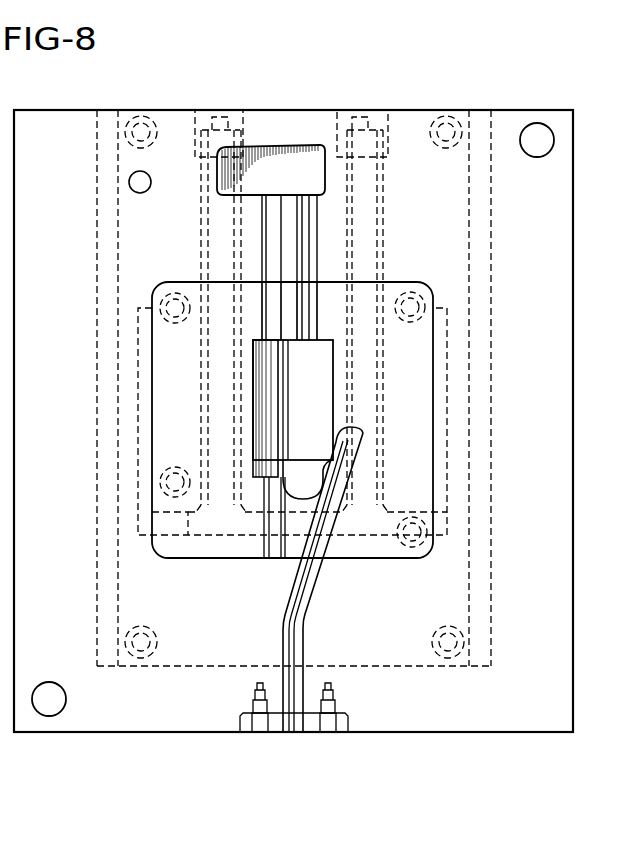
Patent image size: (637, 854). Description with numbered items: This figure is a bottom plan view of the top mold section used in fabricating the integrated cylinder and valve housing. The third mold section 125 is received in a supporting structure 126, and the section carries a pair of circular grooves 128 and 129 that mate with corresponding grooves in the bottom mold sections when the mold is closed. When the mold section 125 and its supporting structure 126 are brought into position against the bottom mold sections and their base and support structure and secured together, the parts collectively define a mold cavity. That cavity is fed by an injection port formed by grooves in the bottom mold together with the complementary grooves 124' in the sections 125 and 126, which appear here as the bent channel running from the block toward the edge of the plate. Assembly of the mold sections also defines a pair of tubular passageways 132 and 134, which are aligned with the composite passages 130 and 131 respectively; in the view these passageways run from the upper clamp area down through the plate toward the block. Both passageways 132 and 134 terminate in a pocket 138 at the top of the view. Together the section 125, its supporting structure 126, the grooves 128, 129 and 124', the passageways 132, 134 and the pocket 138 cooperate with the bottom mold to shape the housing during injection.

The complementary grooves 124' is at (327, 579).
The third mold section 125 is at (402, 283).
The supporting structure 126 is at (553, 243).
The circular groove 128 is at (323, 394).
The circular groove 129 is at (268, 423).
The composite passage 130 is at (273, 322).
The composite passage 131 is at (314, 321).
The tubular passageway 132 is at (318, 212).
The tubular passageway 134 is at (265, 223).
The pocket 138 is at (318, 148).